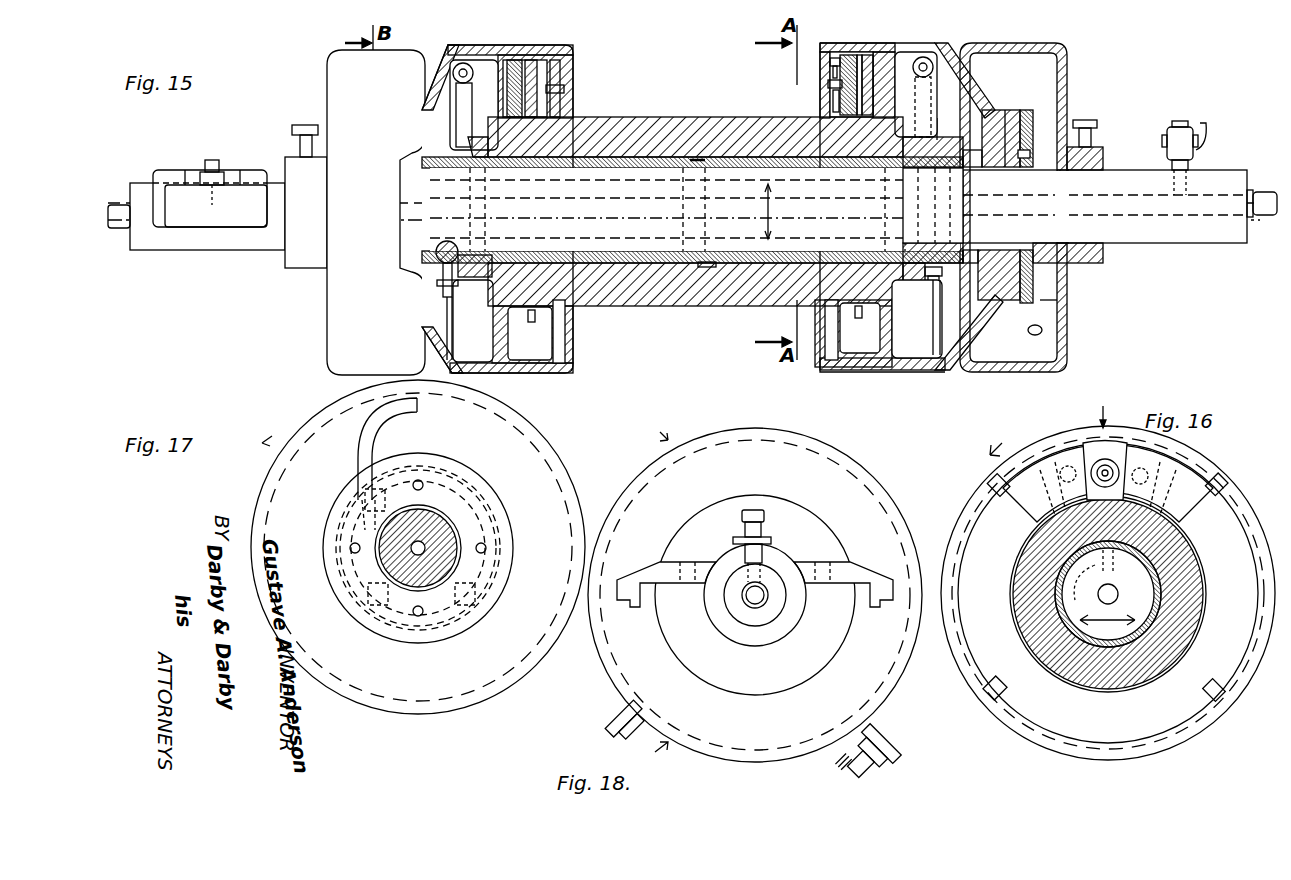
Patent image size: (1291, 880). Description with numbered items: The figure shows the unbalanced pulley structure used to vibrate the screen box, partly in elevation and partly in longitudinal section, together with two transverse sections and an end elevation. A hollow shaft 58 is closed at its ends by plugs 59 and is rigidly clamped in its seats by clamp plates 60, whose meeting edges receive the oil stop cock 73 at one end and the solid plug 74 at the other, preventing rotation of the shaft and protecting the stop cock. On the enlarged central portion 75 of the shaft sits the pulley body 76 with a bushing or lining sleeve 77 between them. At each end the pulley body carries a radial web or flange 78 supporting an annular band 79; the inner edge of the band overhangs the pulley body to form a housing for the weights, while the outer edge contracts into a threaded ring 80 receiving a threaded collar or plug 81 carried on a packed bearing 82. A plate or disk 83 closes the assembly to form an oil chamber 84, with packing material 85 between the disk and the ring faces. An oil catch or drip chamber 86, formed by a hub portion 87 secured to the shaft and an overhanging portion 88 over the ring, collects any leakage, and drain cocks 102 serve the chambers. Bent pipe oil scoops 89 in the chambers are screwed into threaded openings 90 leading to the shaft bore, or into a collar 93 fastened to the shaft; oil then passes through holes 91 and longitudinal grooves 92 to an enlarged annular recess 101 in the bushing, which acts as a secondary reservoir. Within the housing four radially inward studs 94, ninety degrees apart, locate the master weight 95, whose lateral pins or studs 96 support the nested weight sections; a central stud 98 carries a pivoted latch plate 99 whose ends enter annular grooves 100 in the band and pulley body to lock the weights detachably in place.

In FIG. 15, the hollow shaft 58 is at (1117, 178).
In FIG. 15, the plug 59 is at (120, 228).
In FIG. 15, the clamp plate 60 is at (247, 182).
In FIG. 18, the clamp plate 60 is at (660, 575).
In FIG. 15, the oil stop cock 73 is at (1165, 134).
In FIG. 15, the solid plug 74 is at (212, 160).
In FIG. 18, the solid plug 74 is at (768, 548).
In FIG. 15, the enlarged central portion of the shaft 75 is at (662, 150).
In FIG. 16, the enlarged central portion of the shaft 75 is at (1135, 591).
In FIG. 15, the pulley body 76 is at (625, 120).
In FIG. 16, the pulley body 76 is at (1180, 548).
In FIG. 15, the bushing or lining sleeve 77 is at (728, 157).
In FIG. 16, the bushing or lining sleeve 77 is at (1150, 575).
In FIG. 15, the radial web or flange 78 is at (497, 100).
In FIG. 15, the annular band 79 is at (537, 55).
In FIG. 17, the annular band 79 is at (585, 458).
In FIG. 18, the annular band 79 is at (858, 462).
In FIG. 16, the annular band 79 is at (1032, 440).
In FIG. 15, the ring 80 is at (1000, 112).
In FIG. 15, the threaded collar or plug 81 is at (1041, 135).
In FIG. 15, the packed bearing 82 is at (975, 150).
In FIG. 15, the plate or disk 83 is at (1040, 213).
In FIG. 15, the closed chamber 84 is at (917, 319).
In FIG. 15, the packing material 85 is at (1020, 120).
In FIG. 15, the oil catch or drip chamber 86 is at (1058, 298).
In FIG. 15, the hub portion 87 is at (300, 268).
In FIG. 15, the overhanging portion 88 is at (327, 62).
In FIG. 15, the oil scoop 89 is at (958, 60).
In FIG. 17, the oil scoop 89 is at (383, 437).
In FIG. 15, the threaded opening 90 is at (933, 200).
In FIG. 17, the threaded opening 90 is at (500, 470).
In FIG. 15, the hole 91 is at (850, 192).
In FIG. 16, the hole 91 is at (1090, 582).
In FIG. 15, the oil distributing groove 92 is at (767, 211).
In FIG. 16, the oil distributing groove 92 is at (1107, 621).
In FIG. 15, the collar 93 is at (940, 276).
In FIG. 15, the stud 94 is at (694, 331).
In FIG. 16, the stud 94 is at (1108, 587).
In FIG. 15, the master weight 95 is at (855, 55).
In FIG. 16, the master weight 95 is at (1170, 462).
In FIG. 15, the pin or stud 96 is at (704, 86).
In FIG. 16, the pin or stud 96 is at (1114, 469).
In FIG. 15, the stud 98 is at (828, 84).
In FIG. 16, the stud 98 is at (1105, 469).
In FIG. 15, the latch plate 99 is at (830, 62).
In FIG. 16, the latch plate 99 is at (1117, 413).
In FIG. 15, the annular groove 100 is at (834, 55).
In FIG. 16, the annular groove 100 is at (1156, 455).
In FIG. 15, the enlarged annular recess 101 is at (705, 268).
In FIG. 18, the drain cock 102 is at (606, 722).